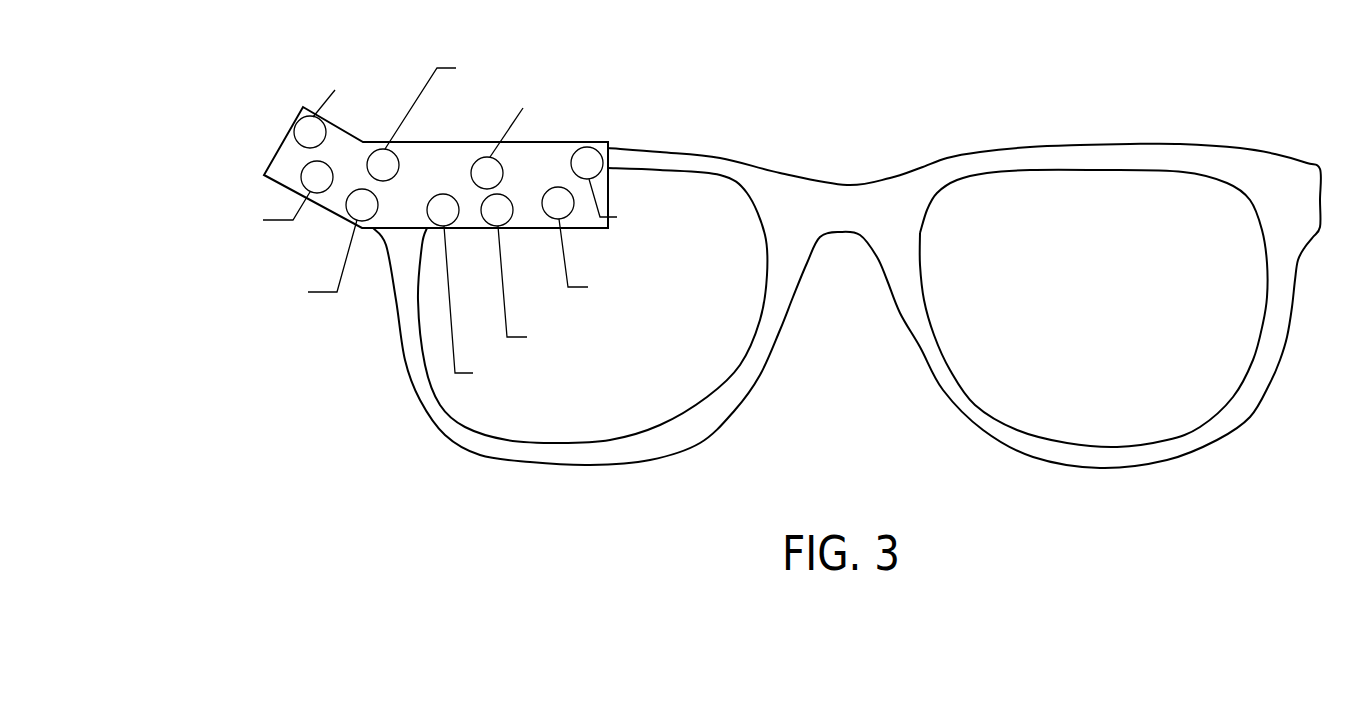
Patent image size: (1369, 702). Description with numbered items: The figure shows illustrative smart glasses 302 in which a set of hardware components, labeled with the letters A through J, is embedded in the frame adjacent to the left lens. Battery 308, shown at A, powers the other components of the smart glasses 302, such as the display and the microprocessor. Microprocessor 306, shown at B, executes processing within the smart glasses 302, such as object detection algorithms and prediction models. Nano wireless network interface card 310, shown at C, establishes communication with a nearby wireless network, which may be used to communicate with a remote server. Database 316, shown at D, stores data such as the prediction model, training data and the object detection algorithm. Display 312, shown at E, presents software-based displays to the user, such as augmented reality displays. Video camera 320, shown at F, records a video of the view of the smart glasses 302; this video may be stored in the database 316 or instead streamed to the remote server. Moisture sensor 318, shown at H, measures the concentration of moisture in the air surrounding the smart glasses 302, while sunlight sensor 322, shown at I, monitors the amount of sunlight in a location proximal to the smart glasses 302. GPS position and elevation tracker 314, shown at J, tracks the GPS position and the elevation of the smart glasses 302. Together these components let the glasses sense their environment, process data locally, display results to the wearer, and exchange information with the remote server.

The smart glasses 302 is at (1117, 143).
The microprocessor 306 is at (167, 207).
The battery 308 is at (297, 75).
The nano wireless network interface card 310 is at (910, 68).
The display 312 is at (622, 110).
The GPS position and elevation tracker 314 is at (192, 322).
The database 316 is at (528, 383).
The moisture sensor 318 is at (637, 352).
The video camera 320 is at (670, 285).
The sunlight sensor 322 is at (718, 221).